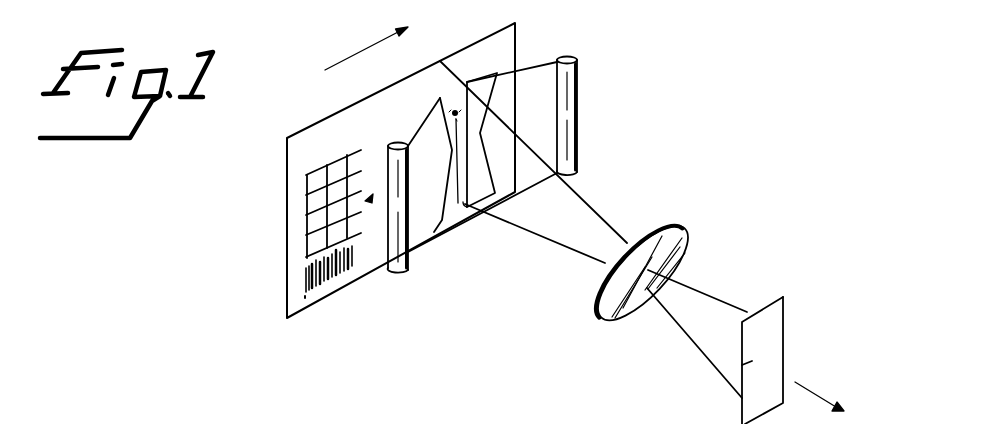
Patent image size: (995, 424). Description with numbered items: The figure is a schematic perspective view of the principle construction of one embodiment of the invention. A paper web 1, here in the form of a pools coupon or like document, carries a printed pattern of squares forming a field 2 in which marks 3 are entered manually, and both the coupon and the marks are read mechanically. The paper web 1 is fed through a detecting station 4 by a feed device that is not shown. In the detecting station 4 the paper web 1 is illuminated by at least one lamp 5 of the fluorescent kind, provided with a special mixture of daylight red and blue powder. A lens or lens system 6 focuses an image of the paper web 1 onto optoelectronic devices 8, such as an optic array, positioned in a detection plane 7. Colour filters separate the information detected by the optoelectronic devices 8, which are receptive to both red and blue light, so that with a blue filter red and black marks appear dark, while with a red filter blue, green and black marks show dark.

The paper web 1 is at (393, 99).
The field of printed squares 2 is at (307, 210).
The marks 3 is at (307, 185).
The detecting station 4 is at (443, 223).
The lamp 5 is at (392, 270).
The lens or lens system 6 is at (677, 227).
The detection plane 7 is at (768, 305).
The optoelectronic devices 8 is at (752, 367).